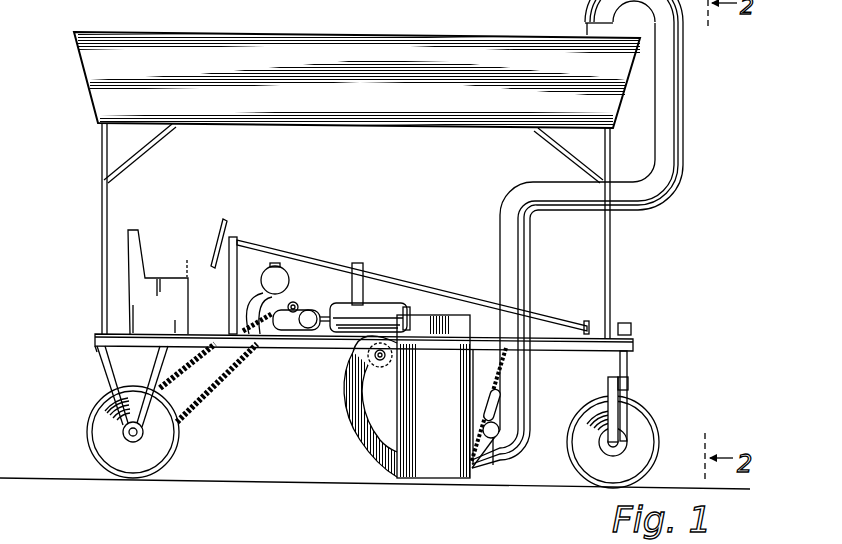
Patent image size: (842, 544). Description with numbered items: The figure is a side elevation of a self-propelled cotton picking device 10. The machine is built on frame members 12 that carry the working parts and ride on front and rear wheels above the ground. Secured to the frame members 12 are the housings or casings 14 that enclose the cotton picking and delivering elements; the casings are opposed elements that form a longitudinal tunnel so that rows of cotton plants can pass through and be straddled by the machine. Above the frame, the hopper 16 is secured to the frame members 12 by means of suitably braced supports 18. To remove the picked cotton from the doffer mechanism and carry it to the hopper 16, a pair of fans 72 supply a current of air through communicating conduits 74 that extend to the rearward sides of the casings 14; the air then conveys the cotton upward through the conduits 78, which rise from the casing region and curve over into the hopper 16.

The cotton picking device 10 is at (312, 349).
The frame members 12 is at (557, 344).
The housings or casings 14 is at (410, 453).
The hopper 16 is at (339, 40).
The braced supports 18 is at (612, 245).
The fans 72 is at (357, 370).
The communicating conduits 74 is at (353, 410).
The conduits 78 is at (688, 90).